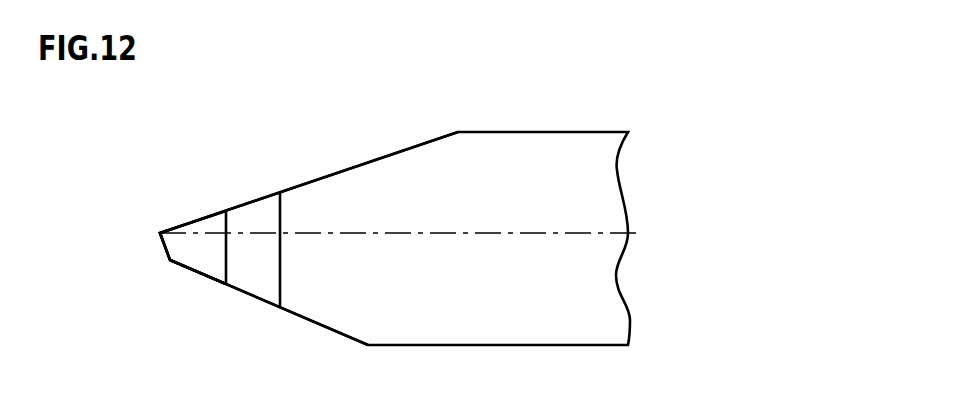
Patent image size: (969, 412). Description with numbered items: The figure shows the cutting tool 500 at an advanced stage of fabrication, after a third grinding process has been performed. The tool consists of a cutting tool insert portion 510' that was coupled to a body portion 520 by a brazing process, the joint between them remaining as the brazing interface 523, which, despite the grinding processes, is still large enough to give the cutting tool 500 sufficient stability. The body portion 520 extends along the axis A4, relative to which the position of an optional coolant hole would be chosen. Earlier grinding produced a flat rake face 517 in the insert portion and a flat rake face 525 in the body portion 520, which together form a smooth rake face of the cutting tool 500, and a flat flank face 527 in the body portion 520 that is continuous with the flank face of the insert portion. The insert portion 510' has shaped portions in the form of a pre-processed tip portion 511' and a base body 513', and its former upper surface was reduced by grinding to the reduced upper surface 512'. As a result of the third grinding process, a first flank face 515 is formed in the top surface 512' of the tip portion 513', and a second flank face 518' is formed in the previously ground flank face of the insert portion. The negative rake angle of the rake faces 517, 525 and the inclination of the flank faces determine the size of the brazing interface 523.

The cutting tool 500 is at (656, 114).
The cutting tool insert portion 510' is at (171, 222).
The pre-processed tip portion 511' is at (158, 291).
The reduced upper surface 512' is at (122, 230).
The base body 513' is at (258, 223).
The first flank face 515 is at (168, 258).
The flat rake face 517 is at (222, 211).
The second flank face 518' is at (214, 312).
The body portion 520 is at (495, 193).
The brazing interface 523 is at (282, 272).
The flat rake face 525 is at (332, 177).
The flat flank face 527 is at (310, 322).
The axis A4 is at (537, 233).